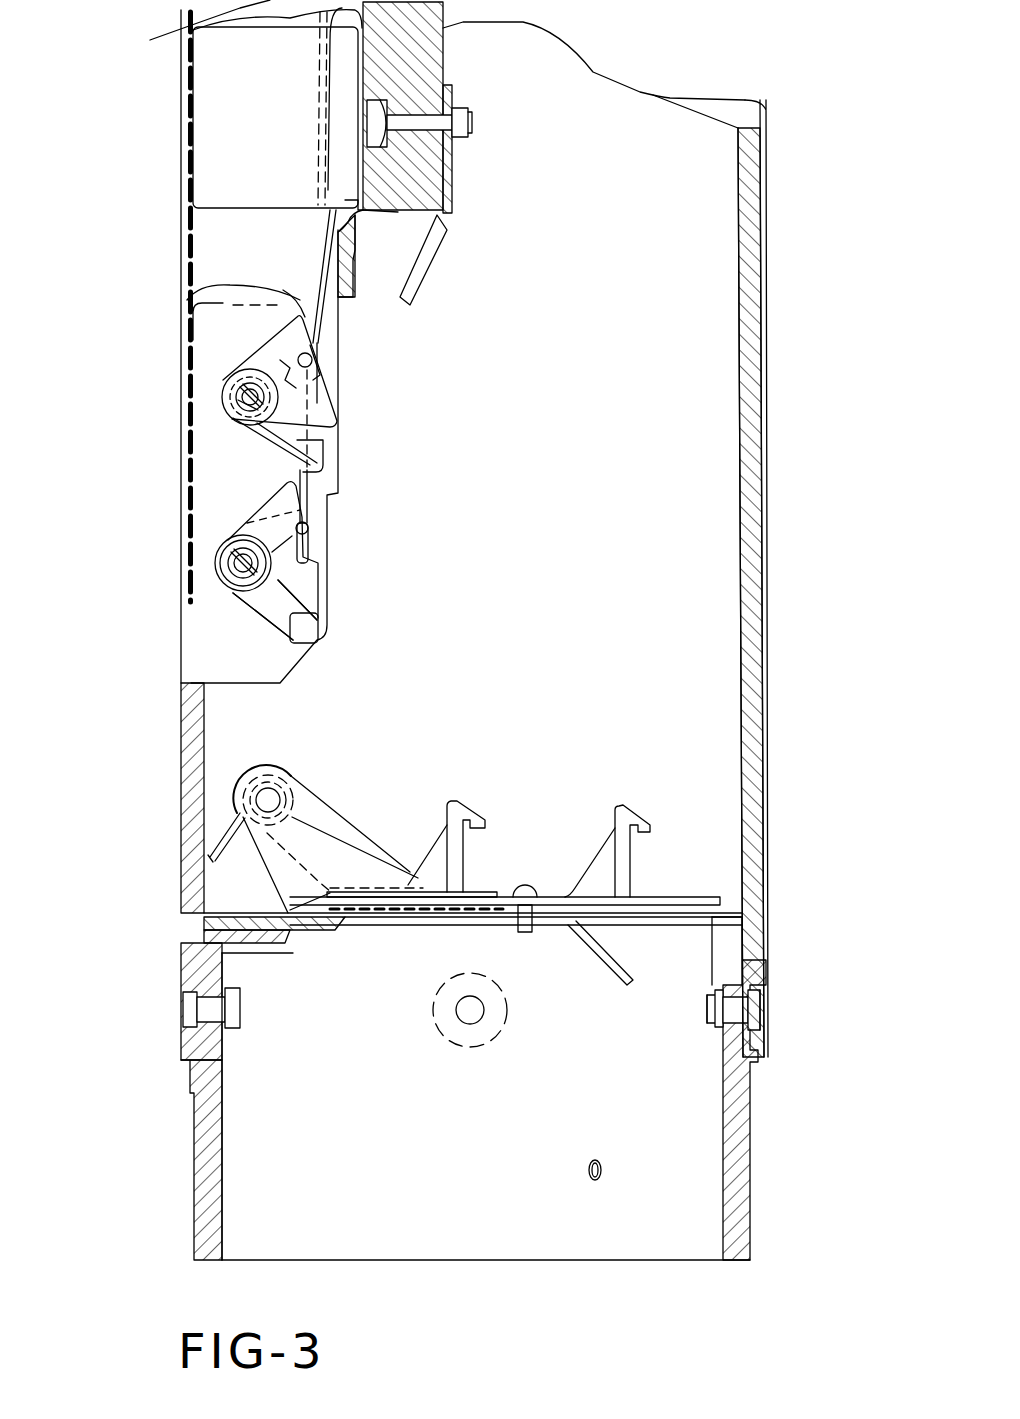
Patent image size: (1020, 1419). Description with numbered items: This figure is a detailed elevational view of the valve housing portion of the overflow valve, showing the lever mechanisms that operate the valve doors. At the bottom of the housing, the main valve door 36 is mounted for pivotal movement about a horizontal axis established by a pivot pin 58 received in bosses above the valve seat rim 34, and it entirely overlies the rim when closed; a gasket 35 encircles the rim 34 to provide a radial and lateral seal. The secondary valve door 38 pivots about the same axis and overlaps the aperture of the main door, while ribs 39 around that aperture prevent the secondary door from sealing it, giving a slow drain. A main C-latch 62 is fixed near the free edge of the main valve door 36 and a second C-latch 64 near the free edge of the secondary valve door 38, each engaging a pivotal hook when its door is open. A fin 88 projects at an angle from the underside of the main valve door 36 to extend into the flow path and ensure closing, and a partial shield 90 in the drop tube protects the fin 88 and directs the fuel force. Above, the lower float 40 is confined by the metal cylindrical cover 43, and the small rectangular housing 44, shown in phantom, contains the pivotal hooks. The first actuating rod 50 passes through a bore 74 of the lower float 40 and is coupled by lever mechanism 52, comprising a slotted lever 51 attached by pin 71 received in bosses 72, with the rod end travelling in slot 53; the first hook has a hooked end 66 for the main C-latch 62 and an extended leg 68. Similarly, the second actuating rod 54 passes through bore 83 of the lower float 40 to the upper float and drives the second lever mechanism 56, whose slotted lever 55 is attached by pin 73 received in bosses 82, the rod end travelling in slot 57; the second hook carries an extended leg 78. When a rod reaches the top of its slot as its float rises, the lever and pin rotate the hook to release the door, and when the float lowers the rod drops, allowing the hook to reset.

The valve seat rim 34 is at (764, 985).
The gasket 35 is at (764, 950).
The main valve door 36 is at (670, 897).
The secondary valve door 38 is at (505, 890).
The ribs 39 is at (393, 912).
The lower float 40 is at (208, 170).
The metal cylindrical cover 43 is at (766, 300).
The small rectangular housing 44 is at (180, 313).
The first actuating rod 50 is at (300, 302).
The slotted lever 51 is at (260, 340).
The lever mechanism 52 is at (262, 452).
The slot 53 is at (322, 380).
The second actuating rod 54 is at (230, 12).
The slotted lever 55 is at (320, 538).
The second lever mechanism 56 is at (290, 588).
The slot 57 is at (322, 563).
The pivot pin 58 is at (235, 797).
The main C-latch 62 is at (620, 804).
The second C-latch 64 is at (455, 802).
The hooked end 66 is at (260, 280).
The extended leg 68 is at (330, 452).
The pin 71 is at (222, 396).
The bosses 72 is at (225, 430).
The pin 73 is at (215, 555).
The bore 74 is at (355, 218).
The extended leg 78 is at (318, 640).
The bosses 82 is at (218, 580).
The bore 83 is at (305, 219).
The fin 88 is at (585, 988).
The partial shield 90 is at (452, 200).